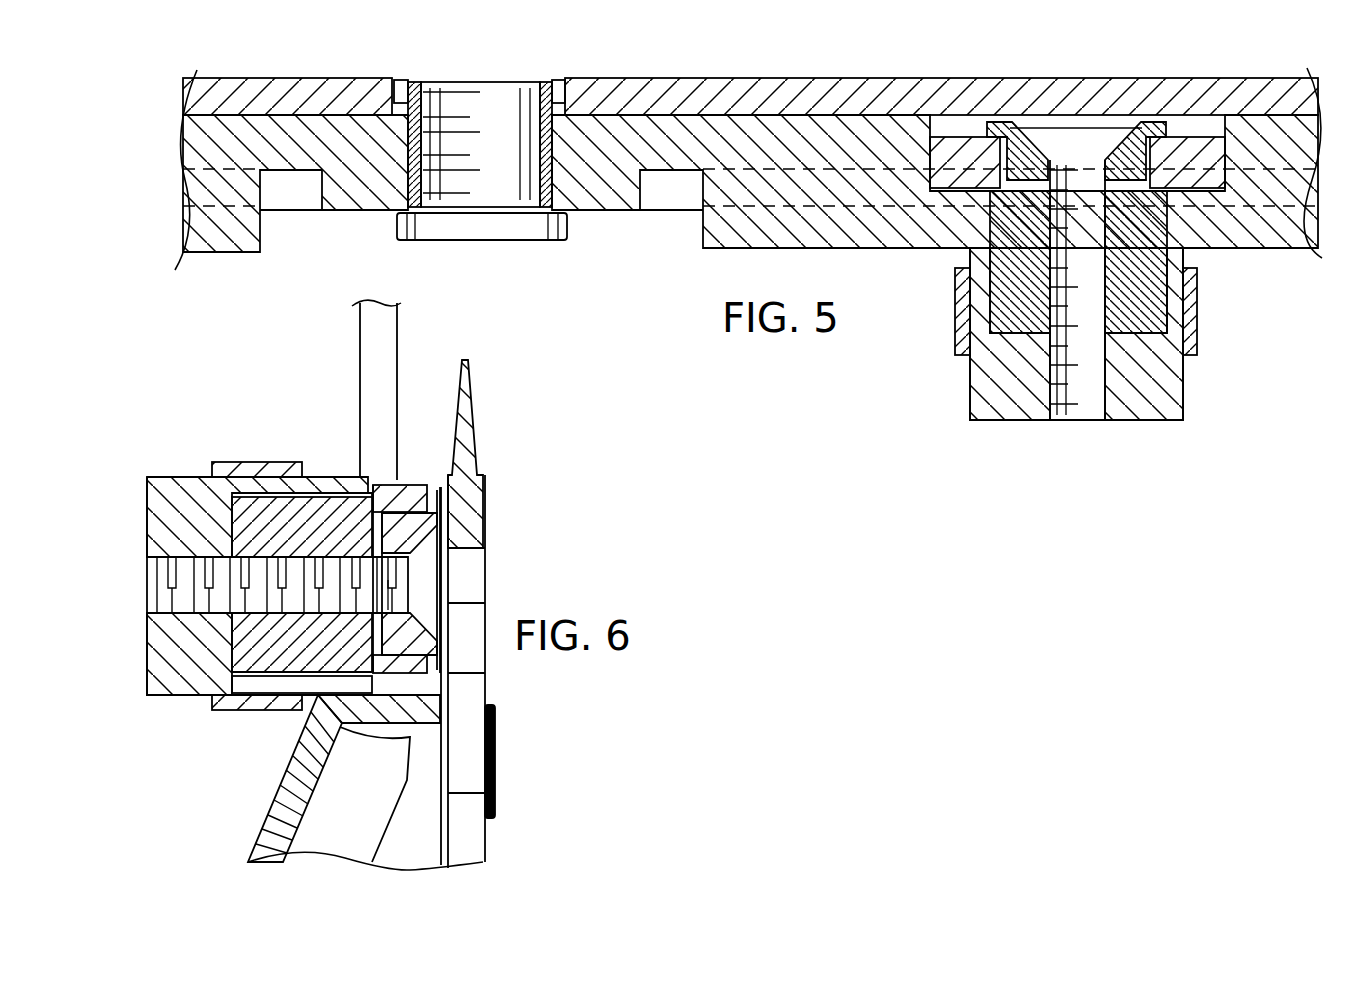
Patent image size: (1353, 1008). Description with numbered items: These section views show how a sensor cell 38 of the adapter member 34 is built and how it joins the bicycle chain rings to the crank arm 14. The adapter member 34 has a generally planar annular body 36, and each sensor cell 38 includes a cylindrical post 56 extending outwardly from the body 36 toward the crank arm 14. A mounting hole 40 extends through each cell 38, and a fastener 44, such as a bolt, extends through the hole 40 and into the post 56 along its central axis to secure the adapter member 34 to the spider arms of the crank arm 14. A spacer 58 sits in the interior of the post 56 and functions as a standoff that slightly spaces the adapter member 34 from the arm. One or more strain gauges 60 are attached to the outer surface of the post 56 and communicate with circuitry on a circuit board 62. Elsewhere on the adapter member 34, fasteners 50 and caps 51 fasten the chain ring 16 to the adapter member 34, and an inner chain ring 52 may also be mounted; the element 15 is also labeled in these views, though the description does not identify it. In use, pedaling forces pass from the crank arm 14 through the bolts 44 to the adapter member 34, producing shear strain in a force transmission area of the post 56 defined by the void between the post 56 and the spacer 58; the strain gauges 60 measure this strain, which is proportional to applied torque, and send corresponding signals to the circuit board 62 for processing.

In FIG. 6, the crank arm 14 is at (268, 800).
In FIG. 5, the clip nut retainer 15 is at (1187, 133).
In FIG. 6, the clip nut retainer 15 is at (406, 494).
In FIG. 5, the chain ring 16 is at (358, 200).
In FIG. 6, the chain ring 16 is at (387, 367).
In FIG. 6, the adapter member 34 is at (472, 462).
In FIG. 5, the annular body 36 is at (184, 137).
In FIG. 5, the sensor cell 38 is at (1089, 319).
In FIG. 6, the sensor cell 38 is at (239, 579).
In FIG. 6, the mounting hole 40 is at (150, 573).
In FIG. 5, the fastener 44 is at (1083, 372).
In FIG. 6, the fastener 44 is at (165, 603).
In FIG. 5, the fastener 50 is at (489, 230).
In FIG. 5, the cap 51 is at (538, 93).
In FIG. 5, the inner chain ring 52 is at (238, 88).
In FIG. 6, the inner chain ring 52 is at (501, 614).
In FIG. 5, the cylindrical post 56 is at (978, 378).
In FIG. 6, the cylindrical post 56 is at (185, 476).
In FIG. 5, the spacer 58 is at (1148, 302).
In FIG. 6, the spacer 58 is at (330, 515).
In FIG. 5, the strain gauge 60 is at (961, 298).
In FIG. 6, the strain gauge 60 is at (258, 462).
In FIG. 6, the circuit board 62 is at (343, 843).